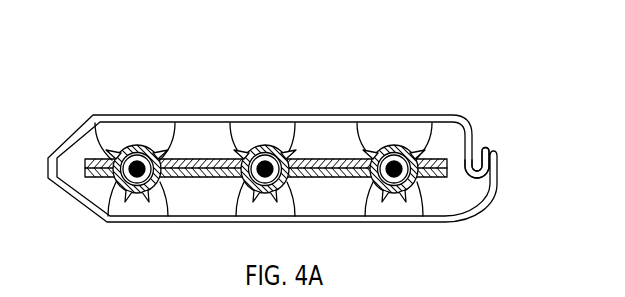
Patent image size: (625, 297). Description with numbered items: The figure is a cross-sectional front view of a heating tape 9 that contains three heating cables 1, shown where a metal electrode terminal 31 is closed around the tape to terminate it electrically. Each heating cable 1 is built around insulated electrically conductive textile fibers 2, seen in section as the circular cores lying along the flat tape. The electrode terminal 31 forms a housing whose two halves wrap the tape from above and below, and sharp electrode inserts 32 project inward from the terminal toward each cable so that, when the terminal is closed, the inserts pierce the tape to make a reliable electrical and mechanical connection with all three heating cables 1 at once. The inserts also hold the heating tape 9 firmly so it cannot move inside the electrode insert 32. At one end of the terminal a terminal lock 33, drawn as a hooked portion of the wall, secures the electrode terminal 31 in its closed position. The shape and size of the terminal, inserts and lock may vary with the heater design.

The heating tape 9 is at (87, 121).
The heating cable 1 is at (249, 130).
The insulated electrically conductive textile fiber 2 is at (393, 159).
The electrode terminal 31 is at (133, 115).
The electrode insert 32 is at (272, 132).
The terminal lock 33 is at (495, 166).